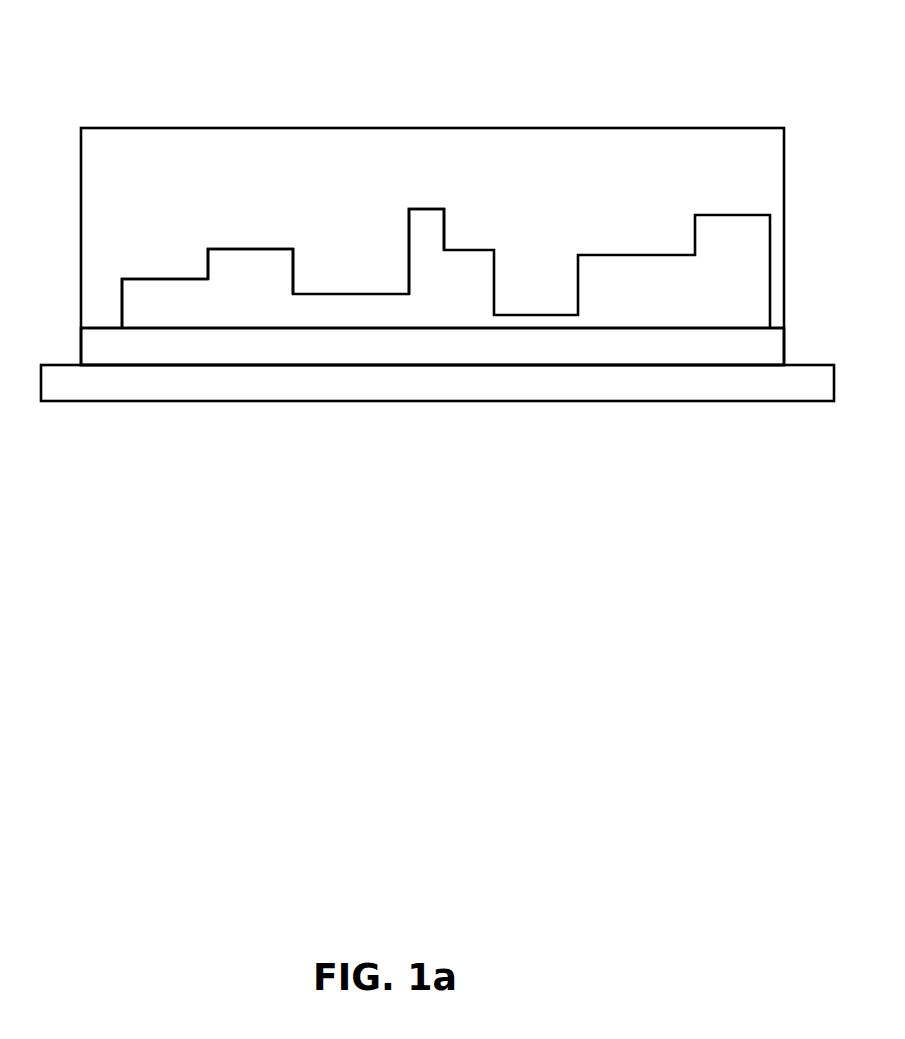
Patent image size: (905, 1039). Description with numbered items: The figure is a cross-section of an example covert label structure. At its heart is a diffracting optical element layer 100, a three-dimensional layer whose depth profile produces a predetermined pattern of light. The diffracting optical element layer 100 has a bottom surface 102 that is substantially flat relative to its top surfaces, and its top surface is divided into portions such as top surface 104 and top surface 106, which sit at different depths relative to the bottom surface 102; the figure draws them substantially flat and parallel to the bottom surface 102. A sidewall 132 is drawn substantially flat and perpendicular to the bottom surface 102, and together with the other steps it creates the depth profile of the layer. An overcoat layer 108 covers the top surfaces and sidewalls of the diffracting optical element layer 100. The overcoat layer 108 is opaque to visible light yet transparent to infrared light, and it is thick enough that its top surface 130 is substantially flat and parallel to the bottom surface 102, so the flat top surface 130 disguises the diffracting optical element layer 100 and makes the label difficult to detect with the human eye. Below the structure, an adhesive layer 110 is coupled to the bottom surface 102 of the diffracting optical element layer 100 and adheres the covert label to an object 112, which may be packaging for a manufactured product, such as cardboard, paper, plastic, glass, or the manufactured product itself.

The diffracting optical element layer 100 is at (248, 310).
The bottom surface 102 is at (598, 328).
The top surface 104 is at (254, 249).
The top surface 106 is at (167, 279).
The overcoat layer 108 is at (748, 167).
The adhesive layer 110 is at (100, 352).
The object 112 is at (114, 377).
The top surface of overcoat layer 130 is at (638, 128).
The sidewall 132 is at (445, 225).